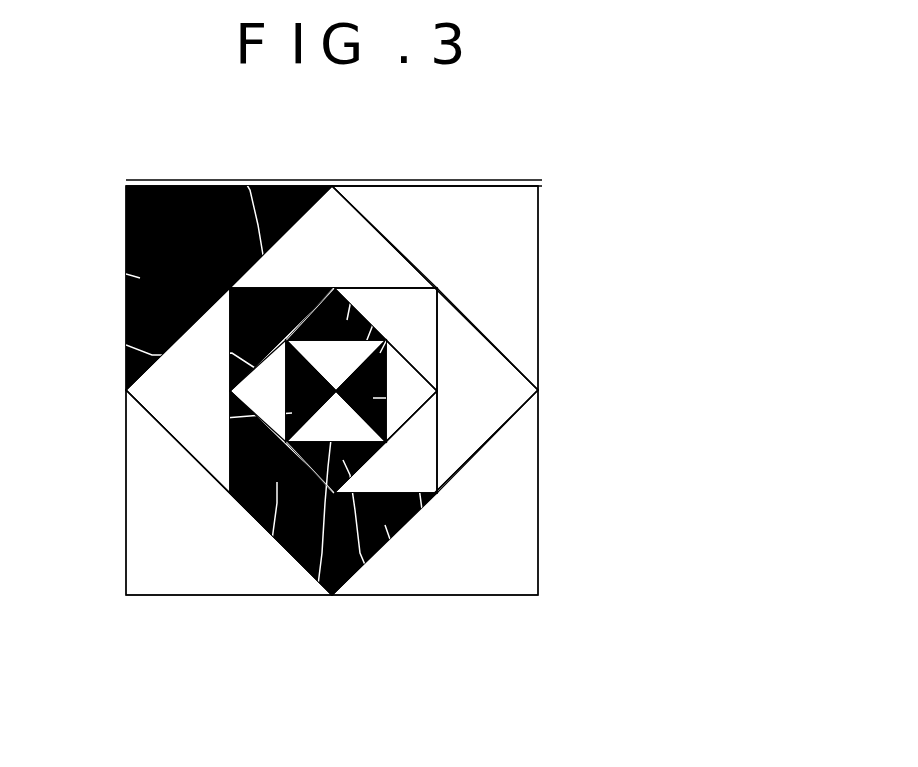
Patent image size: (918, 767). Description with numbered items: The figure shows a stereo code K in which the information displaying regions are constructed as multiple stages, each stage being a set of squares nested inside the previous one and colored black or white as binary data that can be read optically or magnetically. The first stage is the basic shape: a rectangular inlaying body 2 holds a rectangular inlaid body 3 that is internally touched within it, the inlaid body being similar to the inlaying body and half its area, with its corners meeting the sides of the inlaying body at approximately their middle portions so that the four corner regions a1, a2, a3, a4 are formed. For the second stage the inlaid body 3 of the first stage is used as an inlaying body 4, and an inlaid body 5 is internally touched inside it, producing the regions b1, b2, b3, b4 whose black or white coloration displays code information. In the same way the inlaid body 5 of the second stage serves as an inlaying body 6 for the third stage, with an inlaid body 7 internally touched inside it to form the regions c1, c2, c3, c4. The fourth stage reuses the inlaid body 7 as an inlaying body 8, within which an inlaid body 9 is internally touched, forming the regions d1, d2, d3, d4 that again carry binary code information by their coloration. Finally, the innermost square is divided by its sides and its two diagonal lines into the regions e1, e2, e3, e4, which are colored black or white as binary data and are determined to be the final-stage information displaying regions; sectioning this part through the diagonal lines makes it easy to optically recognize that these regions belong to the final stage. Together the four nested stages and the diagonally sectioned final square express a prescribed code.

The inlaying body 2 is at (126, 215).
The stereo code K is at (488, 106).
The inlaid body 3 is at (347, 320).
The inlaying body 4 is at (347, 320).
The inlaid body 5 is at (420, 285).
The inlaying body 6 is at (420, 285).
The inlaid body 7 is at (417, 367).
The inlaying body 8 is at (417, 367).
The inlaid body 9 is at (392, 433).
The region a1 is at (140, 278).
The region a2 is at (528, 275).
The region a3 is at (518, 583).
The region a4 is at (190, 577).
The region b1 is at (162, 405).
The region b2 is at (356, 218).
The region b3 is at (517, 385).
The region b4 is at (385, 525).
The region c1 is at (262, 283).
The region c2 is at (423, 340).
The region c3 is at (418, 480).
The region c4 is at (277, 482).
The region d1 is at (255, 368).
The region d2 is at (363, 350).
The region d3 is at (373, 398).
The region d4 is at (343, 460).
The region e1 is at (292, 413).
The region e2 is at (380, 353).
The region e3 is at (405, 413).
The region e4 is at (332, 430).